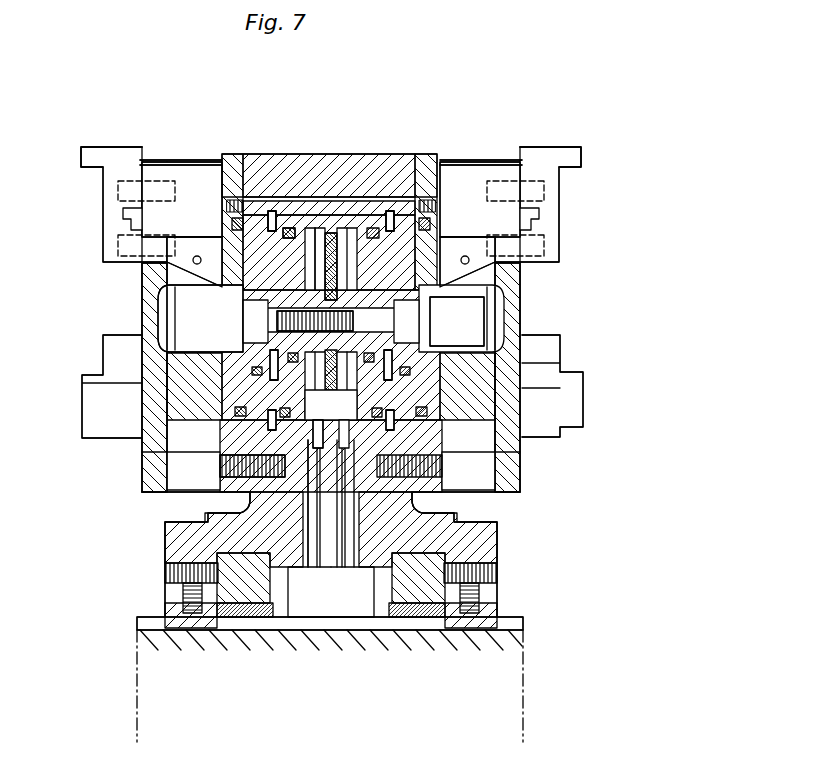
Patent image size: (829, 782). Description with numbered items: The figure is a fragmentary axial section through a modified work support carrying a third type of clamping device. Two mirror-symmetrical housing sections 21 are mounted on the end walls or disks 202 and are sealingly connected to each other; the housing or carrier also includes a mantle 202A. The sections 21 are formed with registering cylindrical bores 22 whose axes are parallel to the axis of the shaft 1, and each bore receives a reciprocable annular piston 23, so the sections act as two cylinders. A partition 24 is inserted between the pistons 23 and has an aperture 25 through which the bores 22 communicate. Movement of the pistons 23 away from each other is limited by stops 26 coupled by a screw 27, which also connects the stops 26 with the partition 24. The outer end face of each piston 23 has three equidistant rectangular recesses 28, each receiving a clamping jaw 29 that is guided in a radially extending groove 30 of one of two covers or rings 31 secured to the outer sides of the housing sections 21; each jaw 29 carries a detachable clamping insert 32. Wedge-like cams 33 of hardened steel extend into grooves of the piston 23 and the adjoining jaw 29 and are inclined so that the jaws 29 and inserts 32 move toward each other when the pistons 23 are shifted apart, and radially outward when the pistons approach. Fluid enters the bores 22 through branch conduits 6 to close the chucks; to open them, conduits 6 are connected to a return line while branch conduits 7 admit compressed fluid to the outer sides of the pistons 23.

The shaft 1 is at (510, 690).
The branch conduits 6 is at (313, 555).
The branch conduits 7 is at (340, 555).
The housing sections 21 is at (335, 240).
The cylindrical bores 22 is at (353, 233).
The annular piston 23 is at (268, 212).
The partition 24 is at (340, 215).
The aperture 25 is at (330, 420).
The stops 26 is at (233, 292).
The screw 27 is at (408, 317).
The recesses 28 is at (196, 160).
The clamping jaw 29 is at (168, 165).
The groove 30 is at (140, 155).
The covers or rings 31 is at (150, 433).
The clamping insert 32 is at (113, 218).
The wedge-like cams 33 is at (178, 257).
The end walls or disks 202 is at (185, 538).
The mantle 202A is at (283, 158).